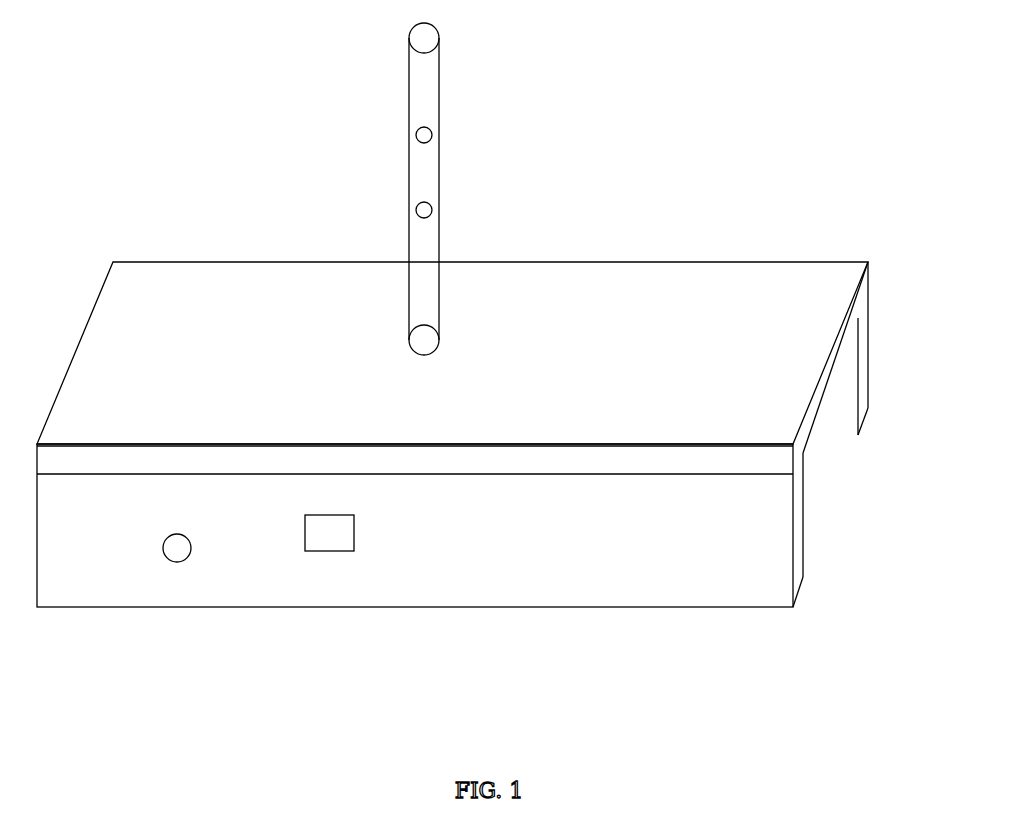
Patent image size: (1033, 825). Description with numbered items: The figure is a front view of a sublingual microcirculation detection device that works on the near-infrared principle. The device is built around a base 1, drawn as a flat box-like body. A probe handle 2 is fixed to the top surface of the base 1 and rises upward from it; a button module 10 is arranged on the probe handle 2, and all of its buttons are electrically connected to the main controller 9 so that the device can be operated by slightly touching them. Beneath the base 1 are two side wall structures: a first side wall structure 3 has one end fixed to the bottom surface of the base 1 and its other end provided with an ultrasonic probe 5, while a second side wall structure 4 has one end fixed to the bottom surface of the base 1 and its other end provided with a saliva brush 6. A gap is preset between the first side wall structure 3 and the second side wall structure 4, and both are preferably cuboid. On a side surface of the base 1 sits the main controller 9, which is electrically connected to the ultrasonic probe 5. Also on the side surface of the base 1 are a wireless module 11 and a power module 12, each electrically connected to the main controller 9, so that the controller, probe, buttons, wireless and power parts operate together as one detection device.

The base 1 is at (632, 312).
The probe handle 2 is at (438, 87).
The first side wall structure 3 is at (870, 383).
The second side wall structure 4 is at (560, 540).
The ultrasonic probe 5 is at (870, 405).
The saliva brush 6 is at (803, 577).
The main controller 9 is at (872, 278).
The button module 10 is at (433, 210).
The wireless module 11 is at (177, 562).
The power module 12 is at (338, 551).